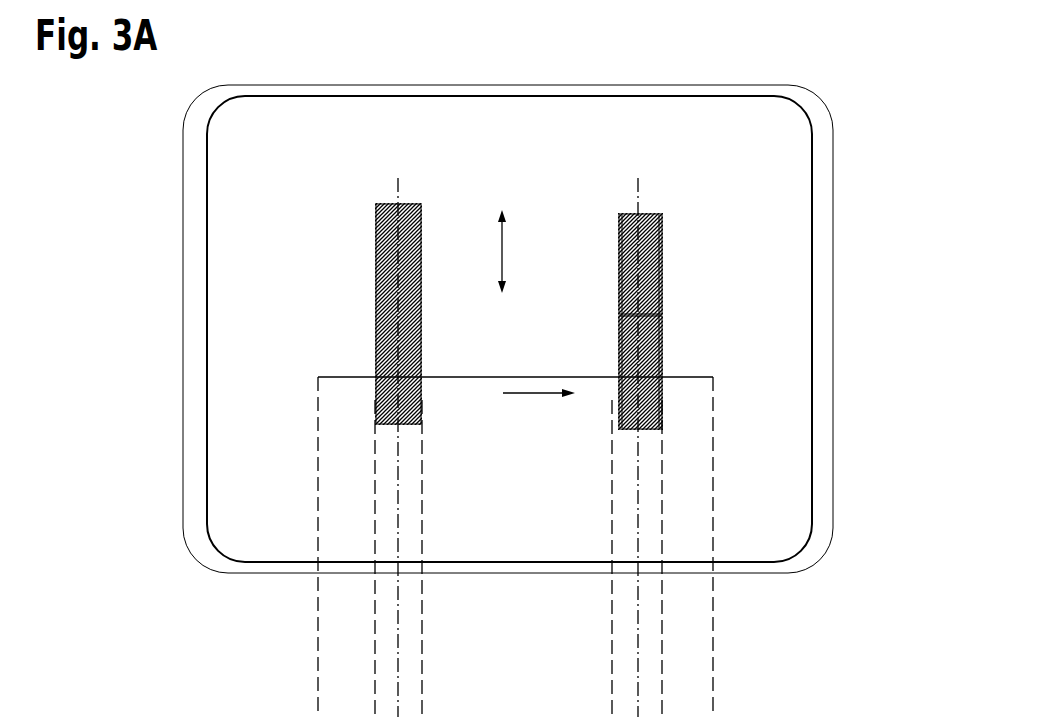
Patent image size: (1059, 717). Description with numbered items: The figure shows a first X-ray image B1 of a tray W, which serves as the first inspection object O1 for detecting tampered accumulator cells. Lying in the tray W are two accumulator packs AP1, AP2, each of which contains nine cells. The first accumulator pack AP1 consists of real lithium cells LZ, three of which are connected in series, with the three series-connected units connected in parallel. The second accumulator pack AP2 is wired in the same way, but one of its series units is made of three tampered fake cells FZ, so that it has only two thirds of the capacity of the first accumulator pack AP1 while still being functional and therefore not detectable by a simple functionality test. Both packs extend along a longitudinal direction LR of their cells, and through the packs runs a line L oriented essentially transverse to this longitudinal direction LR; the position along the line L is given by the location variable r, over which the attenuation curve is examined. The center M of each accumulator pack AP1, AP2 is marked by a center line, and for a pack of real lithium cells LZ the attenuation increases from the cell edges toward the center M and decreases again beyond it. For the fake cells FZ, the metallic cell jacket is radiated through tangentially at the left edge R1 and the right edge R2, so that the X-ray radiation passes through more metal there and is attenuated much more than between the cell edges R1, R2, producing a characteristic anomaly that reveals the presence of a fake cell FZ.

The first X-ray image B1 is at (187, 152).
The tray W is at (568, 103).
The first inspection object O1 is at (797, 408).
The first accumulator pack AP1 is at (352, 203).
The second accumulator pack AP2 is at (695, 203).
The lithium cells LZ is at (380, 368).
The fake cells FZ is at (640, 323).
The center M is at (519, 429).
The line L is at (342, 362).
The location variable r is at (533, 393).
The longitudinal direction LR is at (502, 250).
The left edge R1 is at (623, 433).
The right edge R2 is at (652, 433).